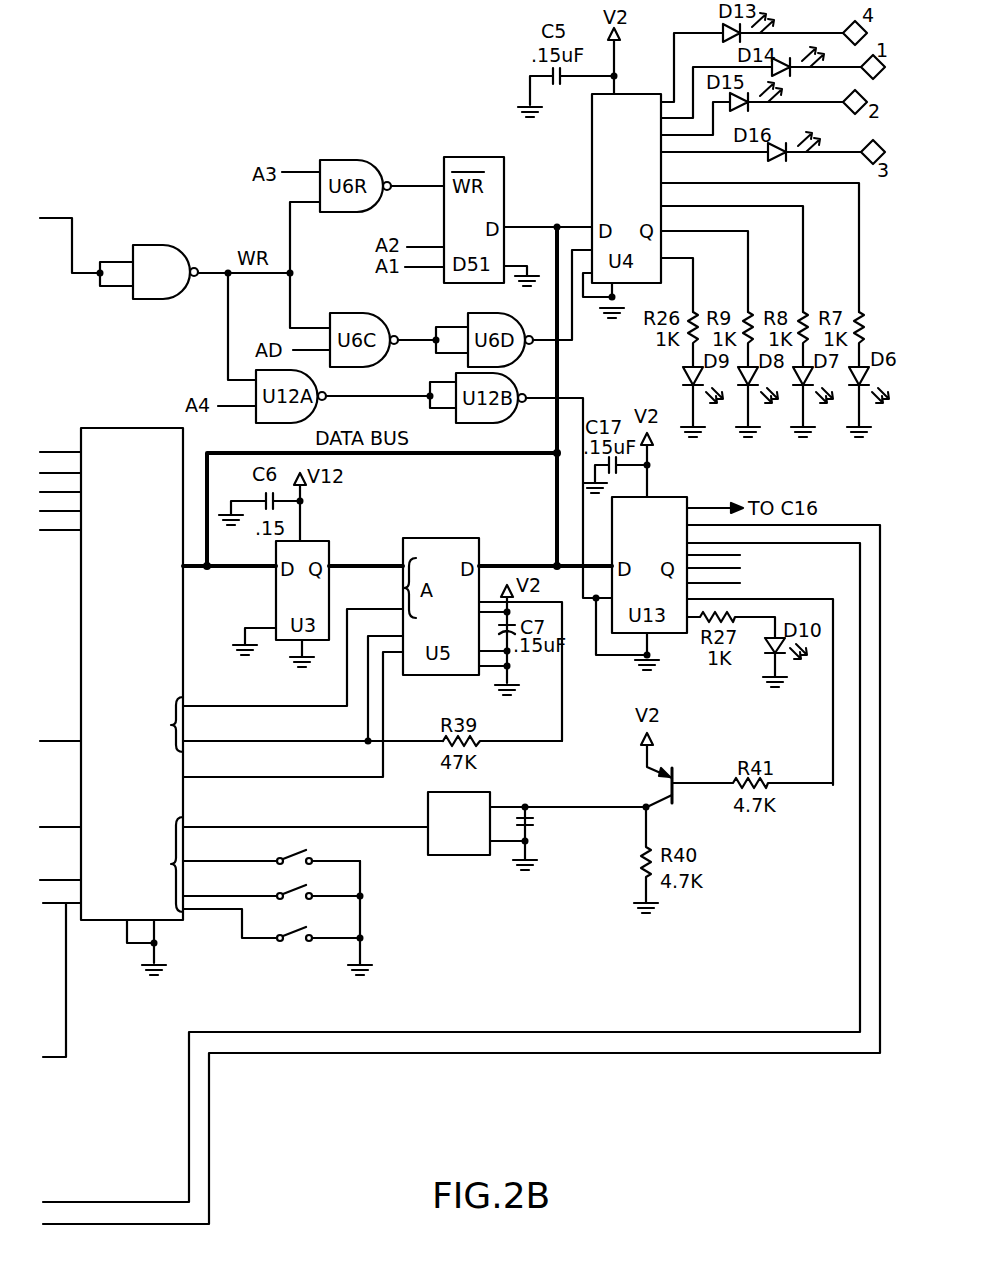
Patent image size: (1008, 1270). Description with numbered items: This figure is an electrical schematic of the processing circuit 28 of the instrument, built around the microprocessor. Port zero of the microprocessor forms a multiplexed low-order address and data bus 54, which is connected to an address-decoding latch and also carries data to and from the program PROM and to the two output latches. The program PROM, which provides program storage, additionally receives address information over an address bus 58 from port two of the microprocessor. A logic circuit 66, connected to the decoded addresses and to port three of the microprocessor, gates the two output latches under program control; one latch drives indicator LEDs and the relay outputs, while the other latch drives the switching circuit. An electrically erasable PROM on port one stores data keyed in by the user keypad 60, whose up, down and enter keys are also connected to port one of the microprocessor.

The logic circuit 66 is at (198, 220).
The low-order address and data bus 54 is at (222, 450).
The address bus 58 is at (333, 782).
The user keypad 60 is at (383, 940).
The processing circuit 28 is at (543, 861).